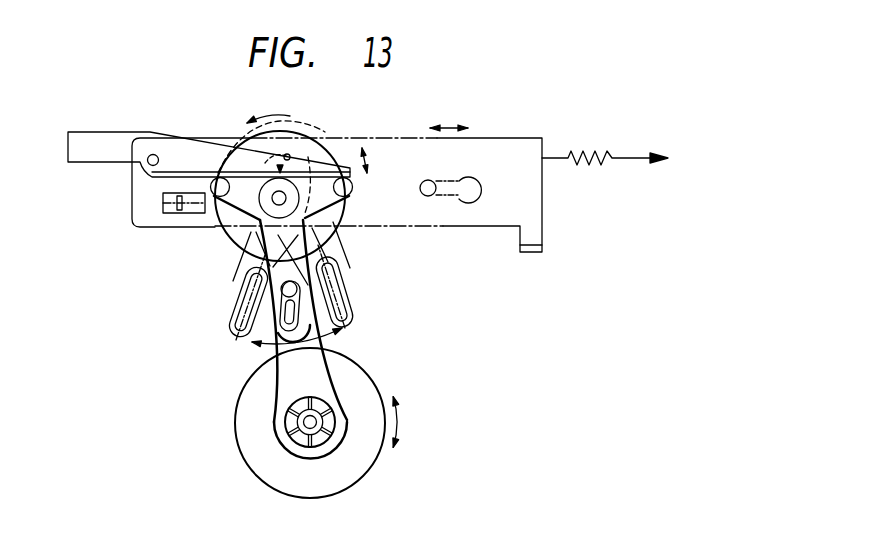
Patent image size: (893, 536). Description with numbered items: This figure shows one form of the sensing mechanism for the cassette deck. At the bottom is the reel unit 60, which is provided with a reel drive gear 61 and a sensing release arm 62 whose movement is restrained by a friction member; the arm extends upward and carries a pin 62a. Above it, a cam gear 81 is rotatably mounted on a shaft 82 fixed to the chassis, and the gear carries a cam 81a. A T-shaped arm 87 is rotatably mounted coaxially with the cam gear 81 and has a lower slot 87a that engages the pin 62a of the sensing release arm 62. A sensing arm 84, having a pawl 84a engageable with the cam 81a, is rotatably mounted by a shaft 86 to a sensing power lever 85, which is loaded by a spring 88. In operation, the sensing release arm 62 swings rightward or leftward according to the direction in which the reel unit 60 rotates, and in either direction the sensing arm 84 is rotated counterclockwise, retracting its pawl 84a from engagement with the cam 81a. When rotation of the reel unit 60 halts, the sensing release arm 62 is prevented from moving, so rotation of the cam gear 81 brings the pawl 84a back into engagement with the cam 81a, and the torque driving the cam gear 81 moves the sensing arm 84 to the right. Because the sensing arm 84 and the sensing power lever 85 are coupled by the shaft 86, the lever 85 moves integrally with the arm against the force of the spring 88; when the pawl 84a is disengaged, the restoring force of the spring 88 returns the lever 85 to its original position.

The reel unit 60 is at (407, 410).
The reel drive gear 61 is at (373, 462).
The sensing release arm 62 is at (287, 375).
The pin 62a is at (283, 322).
The cam gear 81 is at (230, 243).
The cam 81a is at (318, 131).
The shaft 82 is at (283, 198).
The sensing arm 84 is at (113, 132).
The pawl 84a is at (280, 172).
The sensing power lever 85 is at (515, 138).
The shaft 86 is at (147, 164).
The T-shaped arm 87 is at (300, 243).
The lower slot 87a is at (298, 318).
The spring 88 is at (582, 164).